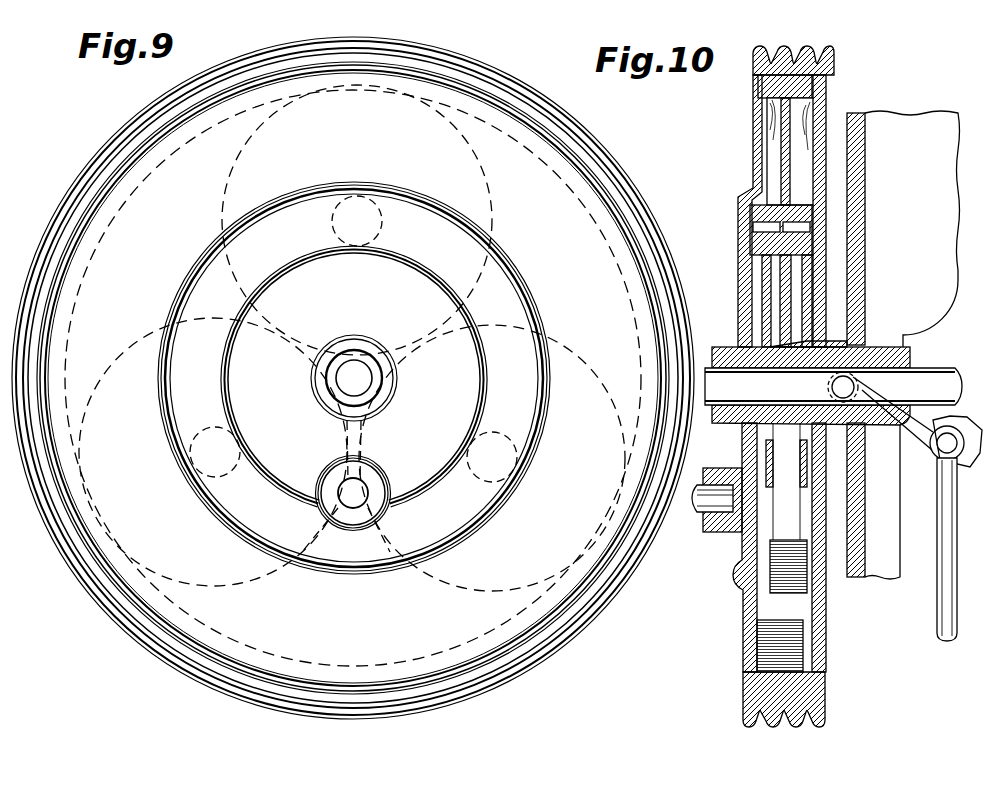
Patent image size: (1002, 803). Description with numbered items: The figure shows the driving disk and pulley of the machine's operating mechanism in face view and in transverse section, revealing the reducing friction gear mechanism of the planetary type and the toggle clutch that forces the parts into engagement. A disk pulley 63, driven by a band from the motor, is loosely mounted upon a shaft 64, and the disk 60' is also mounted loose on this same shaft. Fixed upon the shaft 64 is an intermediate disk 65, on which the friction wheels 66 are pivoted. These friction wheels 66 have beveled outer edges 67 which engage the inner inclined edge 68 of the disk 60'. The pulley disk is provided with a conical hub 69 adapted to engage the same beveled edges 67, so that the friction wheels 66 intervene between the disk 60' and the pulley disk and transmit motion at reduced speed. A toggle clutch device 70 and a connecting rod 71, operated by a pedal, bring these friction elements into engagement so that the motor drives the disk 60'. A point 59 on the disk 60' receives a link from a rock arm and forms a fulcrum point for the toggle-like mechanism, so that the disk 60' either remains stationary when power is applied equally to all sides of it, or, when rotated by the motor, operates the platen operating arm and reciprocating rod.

In FIG. 9, the point 59 is at (353, 497).
In FIG. 10, the point 59 is at (703, 515).
In FIG. 9, the disk 60' is at (353, 378).
In FIG. 10, the disk 60' is at (764, 373).
In FIG. 9, the disk pulley 63 is at (557, 643).
In FIG. 10, the disk pulley 63 is at (820, 58).
In FIG. 9, the shaft 64 is at (350, 384).
In FIG. 10, the shaft 64 is at (913, 372).
In FIG. 10, the intermediate disk 65 is at (742, 537).
In FIG. 9, the friction wheels 66 is at (495, 205).
In FIG. 10, the friction wheels 66 is at (790, 162).
In FIG. 10, the beveled outer edges 67 is at (807, 343).
In FIG. 10, the inner inclined edge 68 is at (815, 98).
In FIG. 10, the conical hub 69 is at (787, 423).
In FIG. 10, the toggle clutch device 70 is at (928, 445).
In FIG. 10, the connecting rod 71 is at (947, 593).